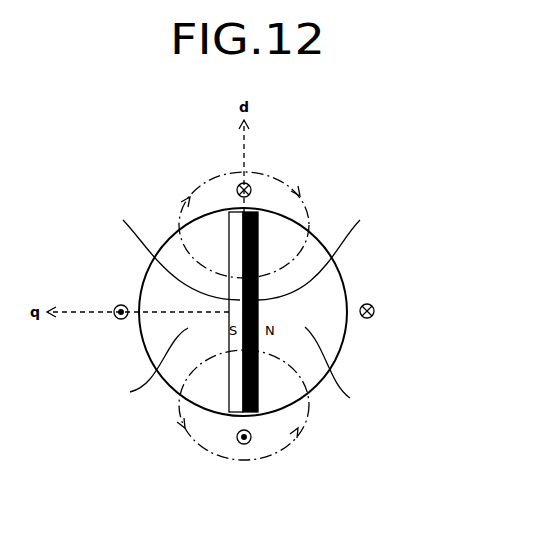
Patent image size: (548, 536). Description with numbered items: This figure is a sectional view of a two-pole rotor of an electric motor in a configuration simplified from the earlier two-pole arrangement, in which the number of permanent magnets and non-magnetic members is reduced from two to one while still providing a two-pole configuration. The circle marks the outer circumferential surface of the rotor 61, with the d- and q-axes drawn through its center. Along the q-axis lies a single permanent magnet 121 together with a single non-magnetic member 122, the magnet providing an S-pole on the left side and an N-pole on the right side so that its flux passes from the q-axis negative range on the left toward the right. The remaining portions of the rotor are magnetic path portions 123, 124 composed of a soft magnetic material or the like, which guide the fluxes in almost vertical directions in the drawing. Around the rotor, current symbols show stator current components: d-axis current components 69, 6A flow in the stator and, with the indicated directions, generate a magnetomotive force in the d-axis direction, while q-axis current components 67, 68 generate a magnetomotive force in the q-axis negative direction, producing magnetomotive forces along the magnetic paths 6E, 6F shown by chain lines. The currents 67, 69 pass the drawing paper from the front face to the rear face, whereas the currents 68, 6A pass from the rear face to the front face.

The outer circumferential surface of a rotor 61 is at (346, 282).
The permanent magnet 121 is at (322, 250).
The non-magnetic member 122 is at (166, 251).
The magnetic path portion 123 is at (140, 365).
The magnetic path portion 124 is at (346, 367).
The d-axis current component 6A is at (117, 305).
The magnetic path 6E is at (214, 172).
The magnetic path 6F is at (177, 412).
The q-axis current component 67 is at (262, 171).
The q-axis current component 68 is at (252, 442).
The d-axis current component 69 is at (373, 302).